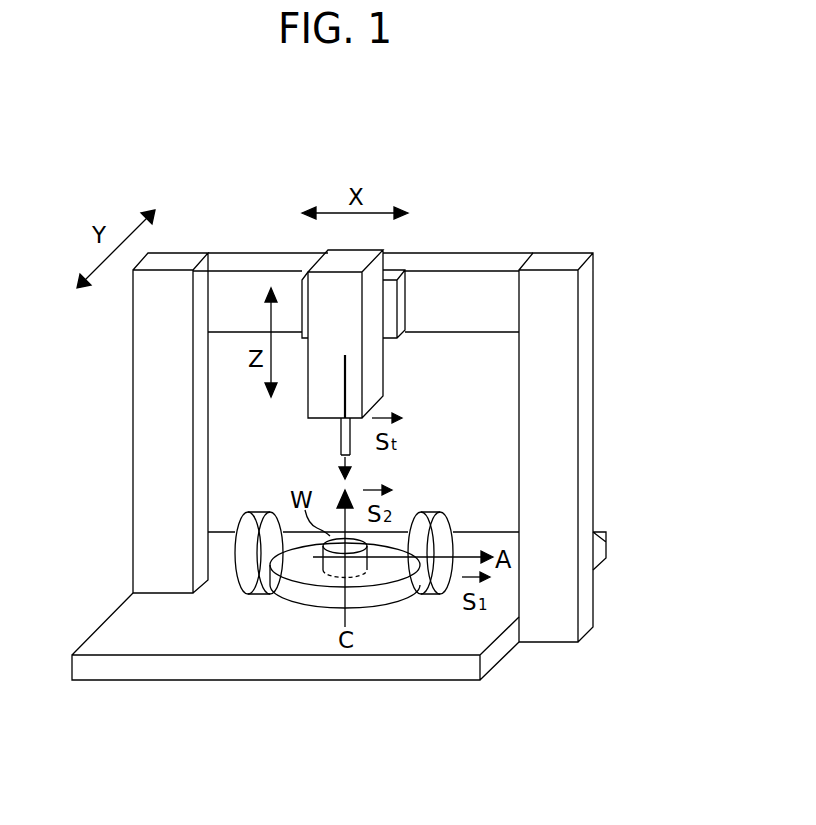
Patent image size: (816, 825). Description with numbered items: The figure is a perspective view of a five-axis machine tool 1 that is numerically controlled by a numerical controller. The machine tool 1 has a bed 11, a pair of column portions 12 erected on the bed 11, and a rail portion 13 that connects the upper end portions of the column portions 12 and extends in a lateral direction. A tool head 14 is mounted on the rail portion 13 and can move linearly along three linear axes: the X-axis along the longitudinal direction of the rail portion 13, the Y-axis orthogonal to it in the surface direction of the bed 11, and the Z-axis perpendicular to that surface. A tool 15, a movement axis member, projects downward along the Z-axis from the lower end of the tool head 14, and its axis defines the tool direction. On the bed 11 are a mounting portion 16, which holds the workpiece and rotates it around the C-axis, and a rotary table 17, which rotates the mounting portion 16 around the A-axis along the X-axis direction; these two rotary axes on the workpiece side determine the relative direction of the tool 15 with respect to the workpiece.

The 5-axis machine tool 1 is at (582, 126).
The bed 11 is at (113, 628).
The column portions 12 is at (133, 433).
The rail portion 13 is at (493, 260).
The tool head 14 is at (375, 371).
The tool 15 is at (338, 440).
The mounting portion 16 is at (313, 603).
The rotary table 17 is at (453, 512).